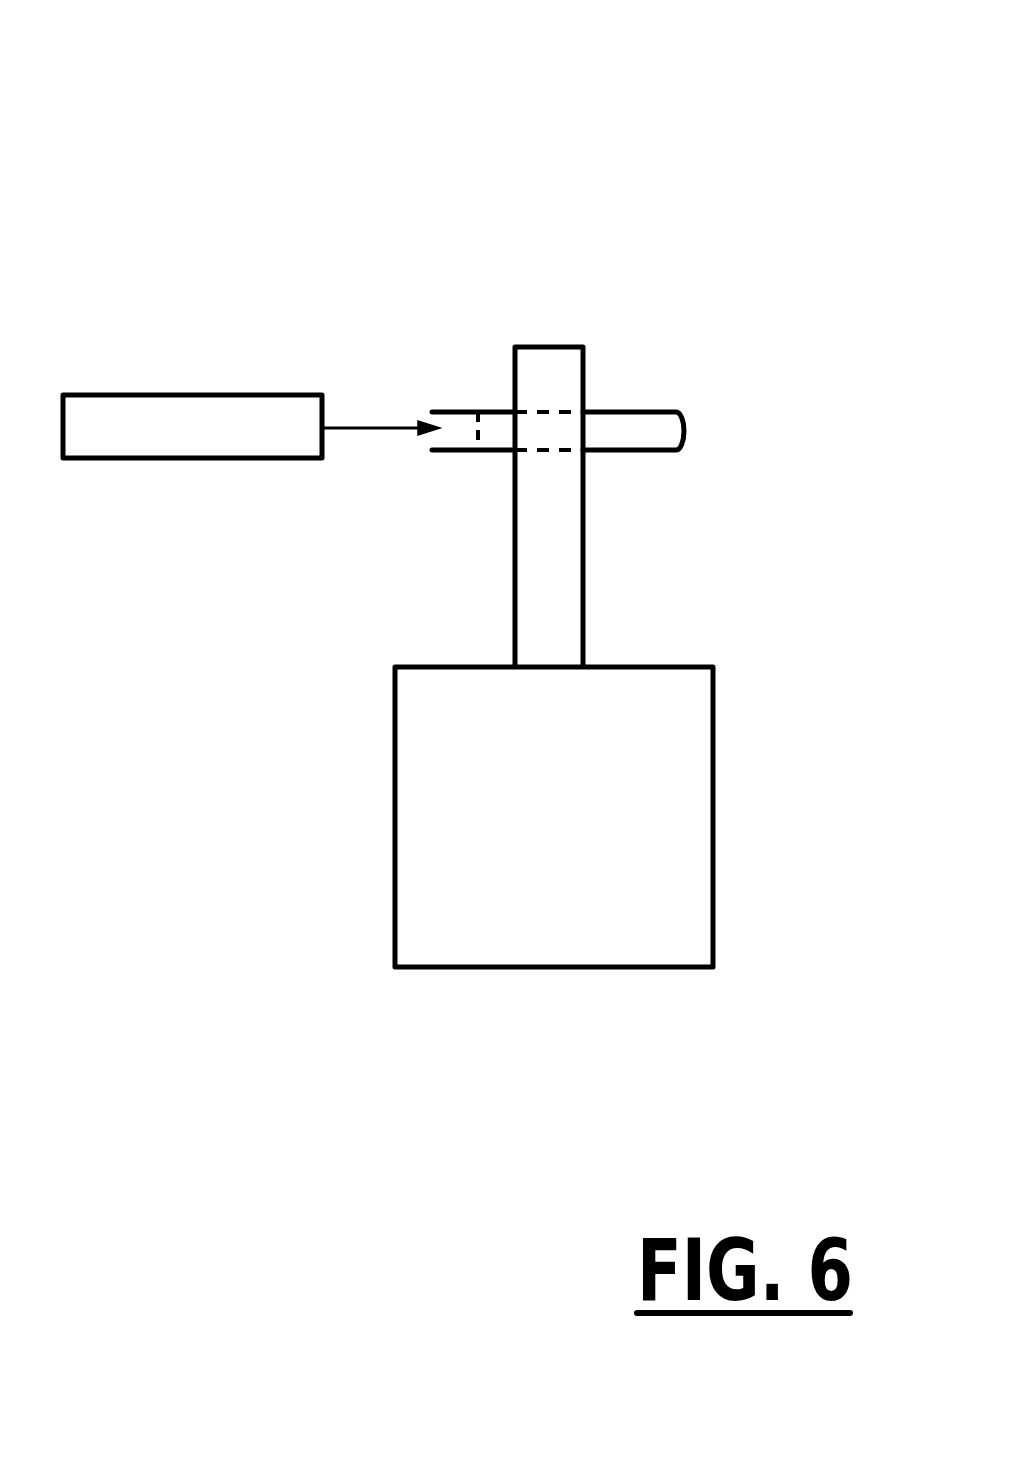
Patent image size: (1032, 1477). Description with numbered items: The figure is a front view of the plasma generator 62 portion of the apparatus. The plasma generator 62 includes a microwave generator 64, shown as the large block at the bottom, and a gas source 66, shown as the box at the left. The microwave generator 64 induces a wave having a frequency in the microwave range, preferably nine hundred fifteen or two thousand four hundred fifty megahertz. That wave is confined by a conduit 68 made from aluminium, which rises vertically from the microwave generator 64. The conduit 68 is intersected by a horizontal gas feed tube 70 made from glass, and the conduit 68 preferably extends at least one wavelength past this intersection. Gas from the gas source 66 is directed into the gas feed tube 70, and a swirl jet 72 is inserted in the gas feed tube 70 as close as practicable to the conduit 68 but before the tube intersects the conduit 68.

The plasma generator 62 is at (800, 243).
The microwave generator 64 is at (683, 808).
The gas source 66 is at (182, 412).
The conduit 68 is at (563, 567).
The gas feed tube 70 is at (627, 423).
The swirl jet 72 is at (478, 428).